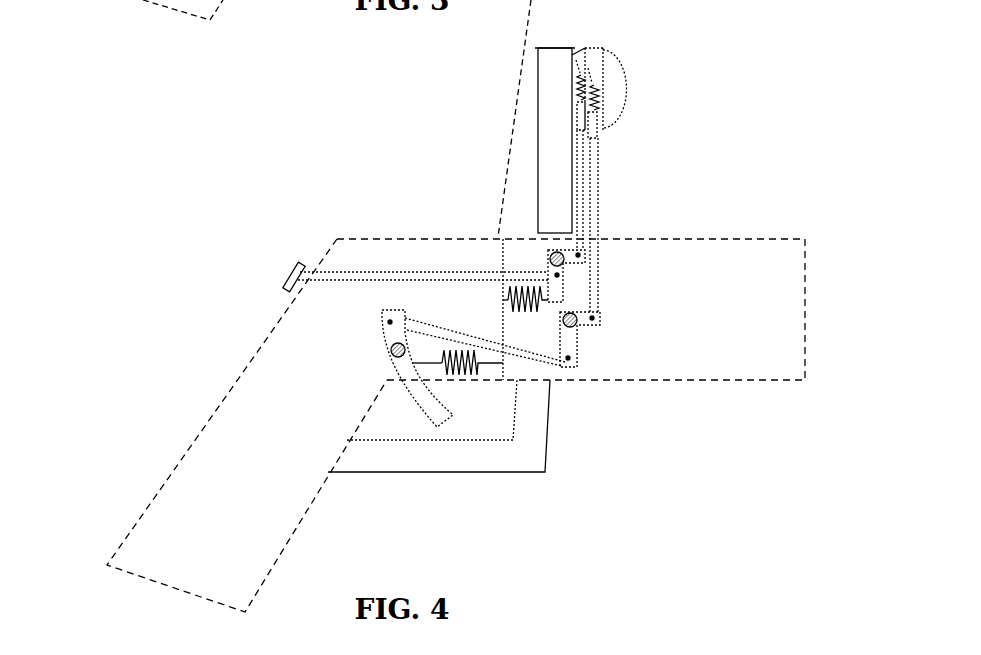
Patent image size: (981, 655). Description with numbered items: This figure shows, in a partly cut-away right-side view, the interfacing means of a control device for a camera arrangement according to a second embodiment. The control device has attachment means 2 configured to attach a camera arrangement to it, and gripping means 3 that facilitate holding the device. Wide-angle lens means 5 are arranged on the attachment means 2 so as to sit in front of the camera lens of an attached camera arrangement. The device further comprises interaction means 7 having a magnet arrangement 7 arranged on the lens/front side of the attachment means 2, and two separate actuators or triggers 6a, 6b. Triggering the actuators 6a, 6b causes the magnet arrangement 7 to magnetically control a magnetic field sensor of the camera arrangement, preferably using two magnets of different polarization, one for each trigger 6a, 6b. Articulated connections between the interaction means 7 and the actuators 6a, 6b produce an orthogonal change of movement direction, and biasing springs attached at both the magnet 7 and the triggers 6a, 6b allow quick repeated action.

The attachment means 2 is at (513, 107).
The gripping means 3 is at (767, 380).
The wide-angle lens means 5 is at (595, 45).
The actuator/trigger 6a is at (447, 418).
The actuator/trigger 6b is at (283, 282).
The interaction means / magnet arrangement 7 is at (597, 135).